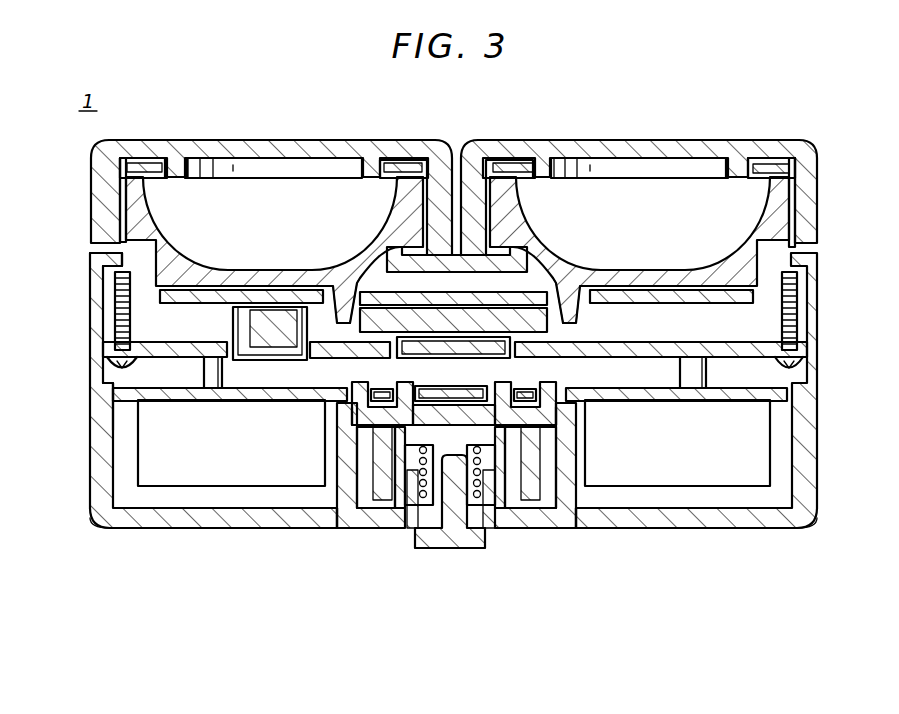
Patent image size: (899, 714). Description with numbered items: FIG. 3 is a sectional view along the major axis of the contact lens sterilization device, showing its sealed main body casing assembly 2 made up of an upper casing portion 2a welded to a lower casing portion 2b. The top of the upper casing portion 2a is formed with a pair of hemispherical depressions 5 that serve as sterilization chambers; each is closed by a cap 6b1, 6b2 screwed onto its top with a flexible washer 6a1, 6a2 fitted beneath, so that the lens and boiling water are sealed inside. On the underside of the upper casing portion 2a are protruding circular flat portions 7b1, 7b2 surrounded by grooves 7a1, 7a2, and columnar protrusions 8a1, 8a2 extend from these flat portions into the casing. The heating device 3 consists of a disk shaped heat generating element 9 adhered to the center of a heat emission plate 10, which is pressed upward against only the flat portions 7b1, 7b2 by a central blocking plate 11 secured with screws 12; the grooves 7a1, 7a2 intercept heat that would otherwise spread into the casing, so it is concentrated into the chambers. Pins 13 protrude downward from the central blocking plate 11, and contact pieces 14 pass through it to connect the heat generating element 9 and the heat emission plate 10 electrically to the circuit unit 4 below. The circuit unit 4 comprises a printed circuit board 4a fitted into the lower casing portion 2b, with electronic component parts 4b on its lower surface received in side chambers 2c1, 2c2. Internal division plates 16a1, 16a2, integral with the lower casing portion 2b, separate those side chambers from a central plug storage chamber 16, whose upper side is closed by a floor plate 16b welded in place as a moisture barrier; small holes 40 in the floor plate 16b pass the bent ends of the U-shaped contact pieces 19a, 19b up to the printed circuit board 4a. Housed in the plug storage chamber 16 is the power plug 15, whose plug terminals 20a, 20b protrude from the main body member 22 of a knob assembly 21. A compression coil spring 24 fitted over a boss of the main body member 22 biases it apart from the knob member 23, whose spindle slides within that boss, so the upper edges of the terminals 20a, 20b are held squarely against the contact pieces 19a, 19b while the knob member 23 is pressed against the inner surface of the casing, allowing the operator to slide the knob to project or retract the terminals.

The main body casing assembly 2 is at (88, 293).
The upper casing portion 2a is at (818, 270).
The lower casing portion 2b is at (200, 530).
The side chamber 2c1 is at (140, 530).
The side chamber 2c2 is at (753, 530).
The heating device 3 is at (103, 262).
The circuit unit 4 is at (155, 364).
The printed circuit board 4a is at (113, 425).
The electronic component parts 4b is at (160, 458).
The hemispherical depression 5 is at (283, 176).
The flexible washer 6a1 is at (400, 170).
The flexible washer 6a2 is at (777, 170).
The cap 6b1 is at (183, 140).
The cap 6b2 is at (545, 142).
The groove 7a1 is at (100, 205).
The groove 7a2 is at (816, 223).
The protruding circular flat portion 7b1 is at (207, 273).
The protruding circular flat portion 7b2 is at (703, 272).
The columnar protrusion 8a1 is at (340, 300).
The columnar protrusion 8a2 is at (565, 315).
The heat generating element 9 is at (550, 330).
The heat emission plate 10 is at (340, 300).
The central blocking plate 11 is at (800, 340).
The screw 12 is at (115, 330).
The pin 13 is at (227, 380).
The contact piece 14 is at (238, 322).
The power plug 15 is at (488, 550).
The plug storage chamber 16 is at (474, 511).
The internal division plate 16a1 is at (313, 530).
The internal division plate 16a2 is at (620, 523).
The floor plate 16b is at (355, 457).
The contact piece 19a is at (357, 412).
The contact piece 19b is at (567, 427).
The plug terminal 20a is at (367, 531).
The plug terminal 20b is at (530, 529).
The knob assembly 21 is at (437, 550).
The main body member 22 is at (560, 527).
The knob member 23 is at (458, 551).
The compression coil spring 24 is at (413, 533).
The small hole 40 is at (350, 383).